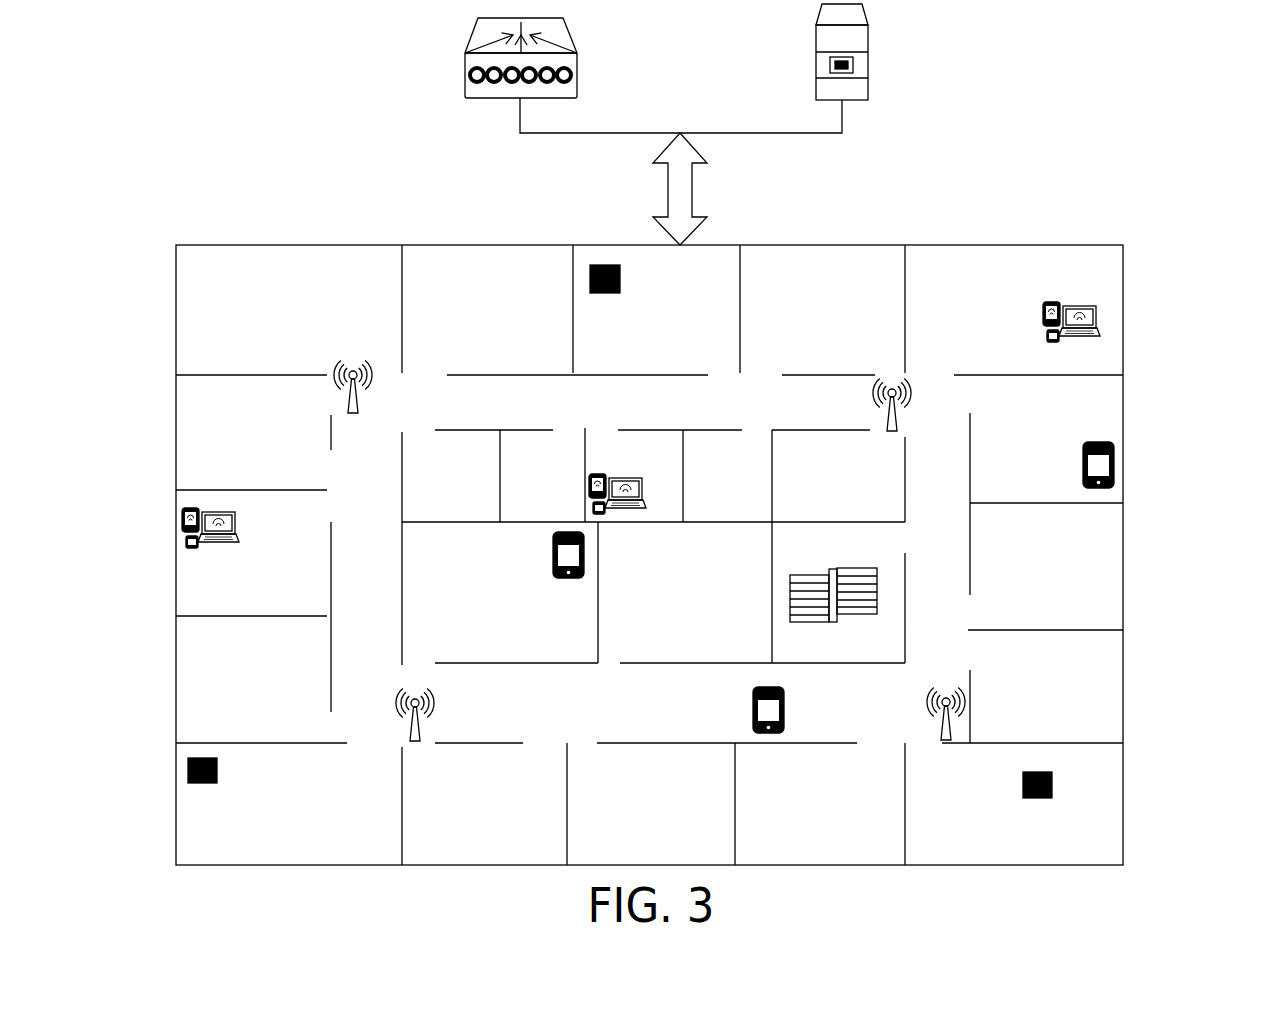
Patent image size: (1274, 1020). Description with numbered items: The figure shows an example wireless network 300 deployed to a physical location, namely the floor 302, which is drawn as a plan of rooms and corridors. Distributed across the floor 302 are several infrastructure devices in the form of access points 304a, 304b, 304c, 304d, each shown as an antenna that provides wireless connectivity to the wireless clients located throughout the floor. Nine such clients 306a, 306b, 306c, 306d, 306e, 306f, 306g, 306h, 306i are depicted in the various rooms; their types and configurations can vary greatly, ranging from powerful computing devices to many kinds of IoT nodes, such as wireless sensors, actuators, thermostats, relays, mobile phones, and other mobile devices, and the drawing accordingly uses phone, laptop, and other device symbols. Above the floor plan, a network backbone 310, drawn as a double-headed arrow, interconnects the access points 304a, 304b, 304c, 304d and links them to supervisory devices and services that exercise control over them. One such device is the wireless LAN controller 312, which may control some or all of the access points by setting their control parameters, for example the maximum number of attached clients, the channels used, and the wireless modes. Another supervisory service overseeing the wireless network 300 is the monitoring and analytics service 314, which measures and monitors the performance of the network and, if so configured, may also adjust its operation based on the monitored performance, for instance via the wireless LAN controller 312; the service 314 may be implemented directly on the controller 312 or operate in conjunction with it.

The wireless network 300 is at (1183, 78).
The floor 302 is at (185, 873).
The access point 304a is at (326, 358).
The access point 304b is at (912, 410).
The access point 304c is at (388, 693).
The access point 304d is at (937, 682).
The wireless client 306a is at (789, 712).
The wireless client 306b is at (563, 590).
The wireless client 306c is at (1067, 457).
The wireless client 306d is at (620, 310).
The wireless client 306e is at (215, 797).
The wireless client 306f is at (1032, 808).
The wireless client 306g is at (208, 560).
The wireless client 306h is at (657, 498).
The wireless client 306i is at (1038, 320).
The network backbone 310 is at (658, 191).
The wireless LAN controller (WLC) 312 is at (452, 52).
The monitoring and analytics service 314 is at (860, 113).